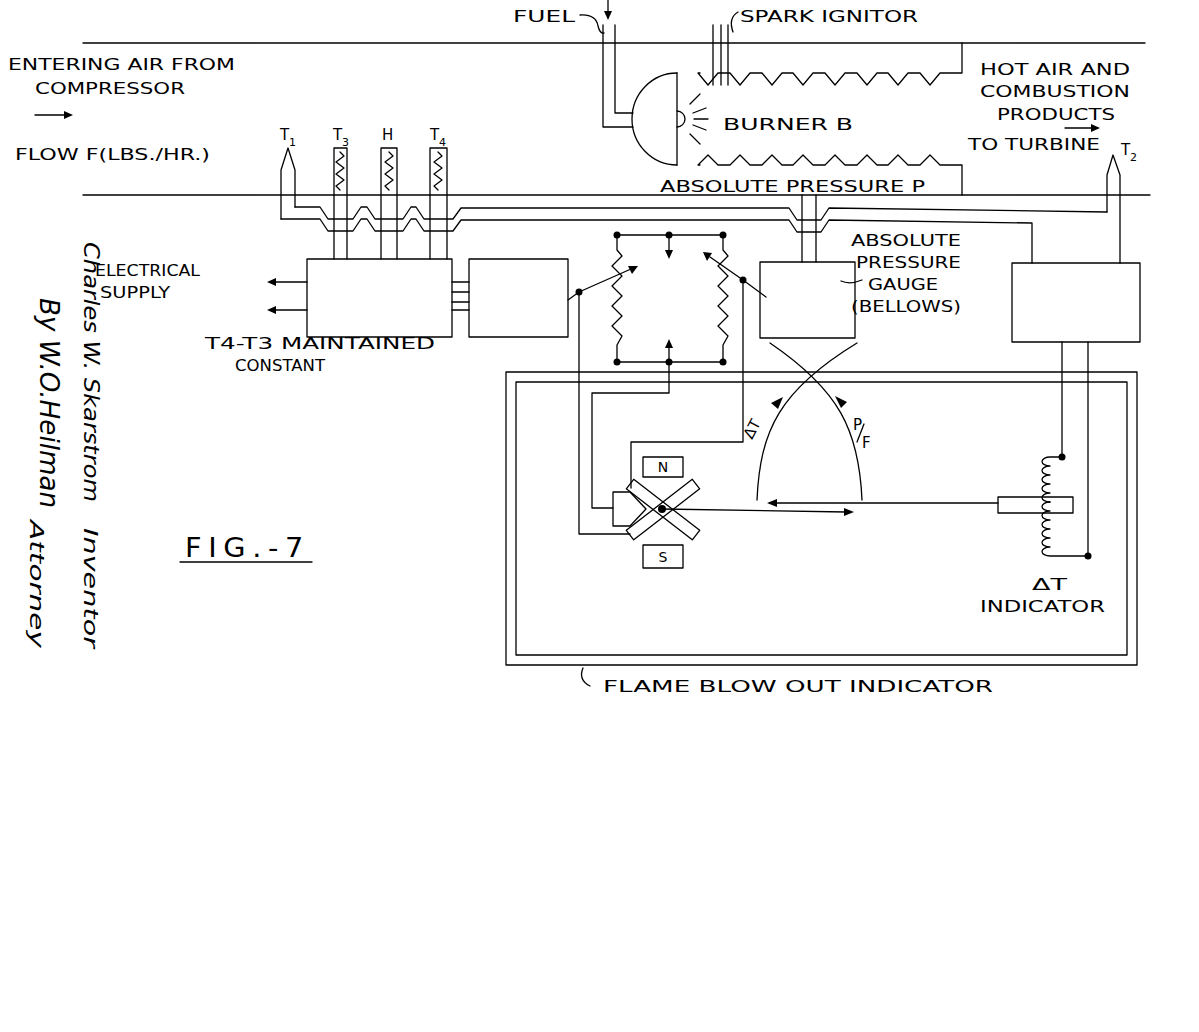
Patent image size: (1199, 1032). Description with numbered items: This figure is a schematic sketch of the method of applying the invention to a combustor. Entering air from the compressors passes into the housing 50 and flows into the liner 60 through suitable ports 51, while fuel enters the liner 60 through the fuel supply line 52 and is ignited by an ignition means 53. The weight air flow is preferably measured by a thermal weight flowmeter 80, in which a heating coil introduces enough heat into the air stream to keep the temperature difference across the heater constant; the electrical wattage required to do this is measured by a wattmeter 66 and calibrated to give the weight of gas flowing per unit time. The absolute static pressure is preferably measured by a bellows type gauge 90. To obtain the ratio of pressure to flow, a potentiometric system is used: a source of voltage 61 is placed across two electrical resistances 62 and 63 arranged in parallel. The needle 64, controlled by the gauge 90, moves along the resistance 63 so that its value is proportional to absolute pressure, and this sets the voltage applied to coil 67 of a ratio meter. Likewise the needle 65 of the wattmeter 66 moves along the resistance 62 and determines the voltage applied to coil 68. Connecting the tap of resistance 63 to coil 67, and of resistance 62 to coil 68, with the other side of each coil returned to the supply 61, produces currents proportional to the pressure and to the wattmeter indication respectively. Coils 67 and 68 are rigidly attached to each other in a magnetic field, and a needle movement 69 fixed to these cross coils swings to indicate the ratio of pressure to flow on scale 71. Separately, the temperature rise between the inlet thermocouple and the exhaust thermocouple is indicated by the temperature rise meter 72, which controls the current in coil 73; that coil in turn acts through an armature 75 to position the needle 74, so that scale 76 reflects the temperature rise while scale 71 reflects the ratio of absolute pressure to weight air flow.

The housing 50 is at (616, 104).
The ports 51 is at (926, 88).
The fuel supply line 52 is at (621, 30).
The ignition means 53 is at (712, 32).
The liner 60 is at (651, 121).
The source of voltage 61 is at (670, 299).
The electrical resistance 62 is at (621, 329).
The electrical resistance 63 is at (719, 330).
The needle 64 is at (698, 369).
The needle 65 is at (599, 290).
The wattmeter 66 is at (534, 338).
The coil 67 is at (698, 536).
The coil 68 is at (698, 487).
The needle movement 69 is at (778, 514).
The scale 71 is at (864, 474).
The temperature rise meter 72 is at (1141, 300).
The coil 73 is at (1030, 471).
The needle 74 is at (920, 516).
The armature 75 is at (1033, 531).
The scale 76 is at (764, 468).
The thermal weight flowmeter 80 is at (307, 259).
The bellows type gauge 90 is at (807, 266).